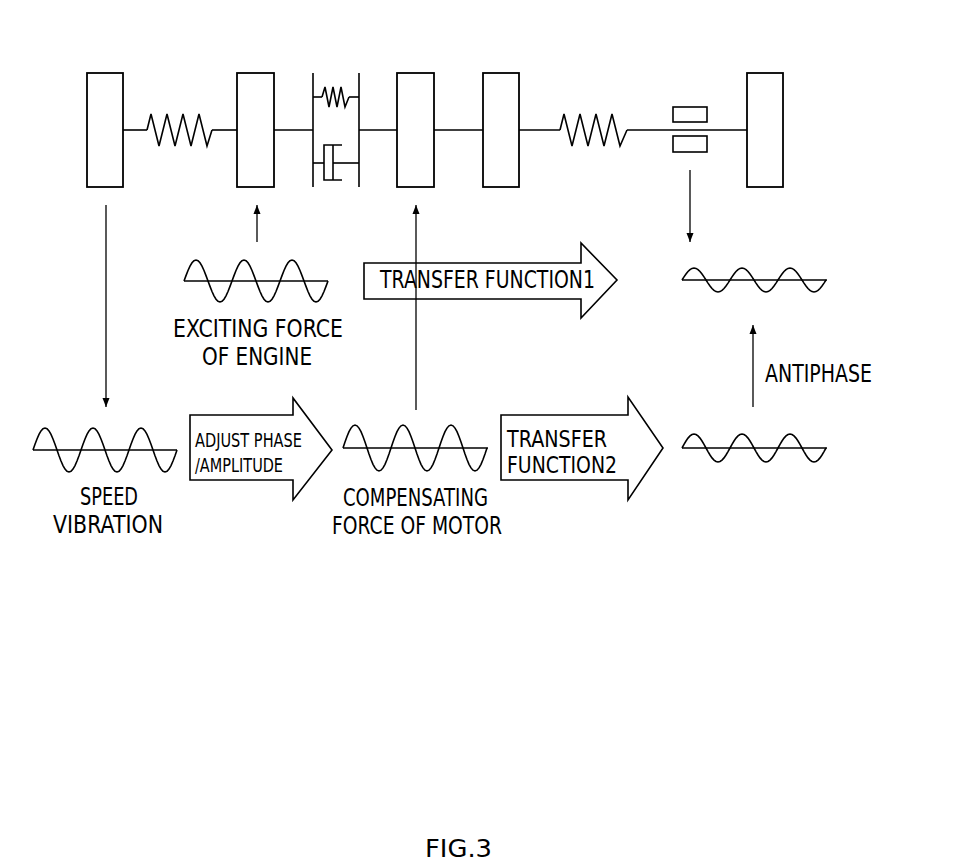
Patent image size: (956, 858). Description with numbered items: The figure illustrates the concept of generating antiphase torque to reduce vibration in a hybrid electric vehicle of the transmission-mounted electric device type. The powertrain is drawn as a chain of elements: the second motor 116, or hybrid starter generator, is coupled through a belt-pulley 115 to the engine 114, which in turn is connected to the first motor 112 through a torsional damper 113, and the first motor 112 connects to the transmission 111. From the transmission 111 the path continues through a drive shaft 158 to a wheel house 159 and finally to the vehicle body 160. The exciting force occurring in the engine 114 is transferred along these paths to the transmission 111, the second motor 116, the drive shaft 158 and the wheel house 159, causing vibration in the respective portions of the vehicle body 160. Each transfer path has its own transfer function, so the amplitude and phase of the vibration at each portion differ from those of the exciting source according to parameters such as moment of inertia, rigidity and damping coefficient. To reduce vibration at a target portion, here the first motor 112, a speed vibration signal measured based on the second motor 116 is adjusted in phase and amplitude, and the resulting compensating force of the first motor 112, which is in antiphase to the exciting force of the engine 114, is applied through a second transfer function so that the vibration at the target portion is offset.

The transmission 111 is at (500, 73).
The first motor 112 is at (415, 73).
The torsional damper 113 is at (331, 85).
The engine 114 is at (256, 73).
The belt-pulley 115 is at (173, 117).
The second motor 116 is at (105, 73).
The drive shaft 158 is at (593, 70).
The wheel house 159 is at (688, 70).
The vehicle body 160 is at (765, 73).